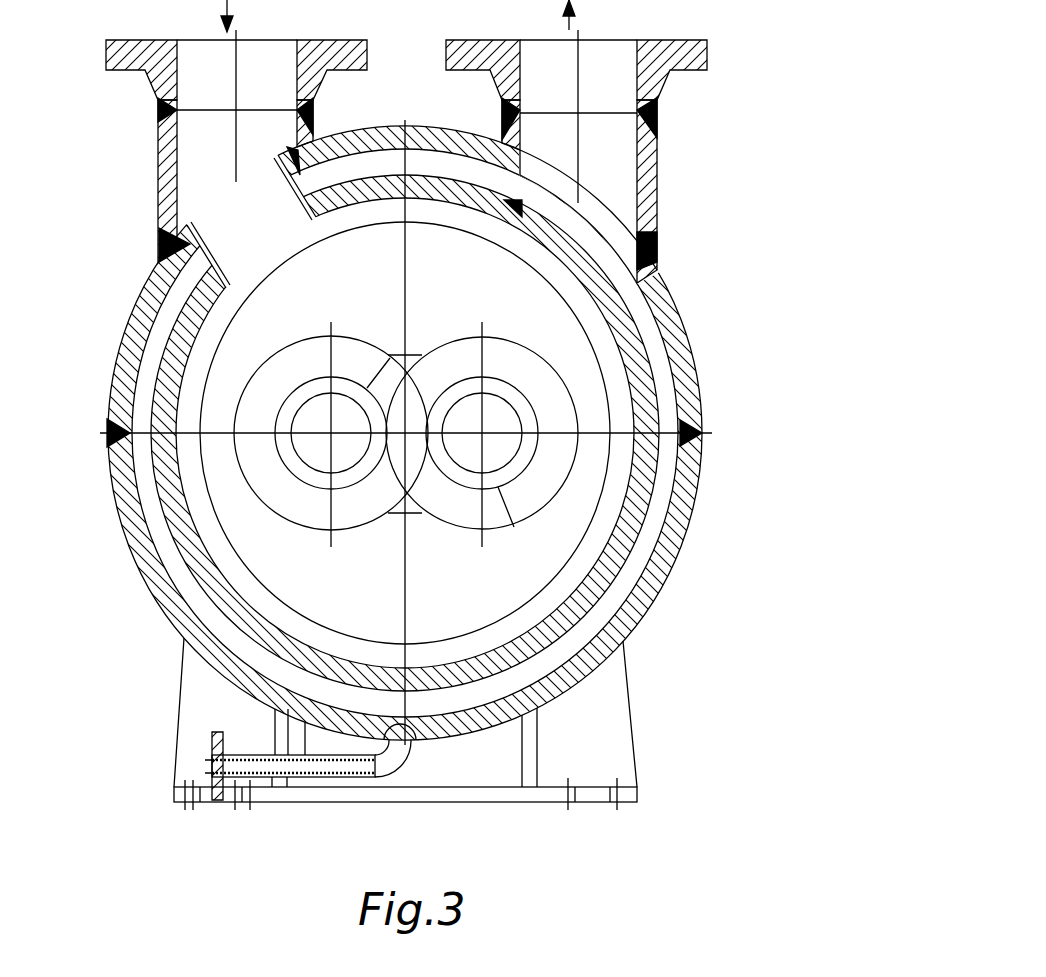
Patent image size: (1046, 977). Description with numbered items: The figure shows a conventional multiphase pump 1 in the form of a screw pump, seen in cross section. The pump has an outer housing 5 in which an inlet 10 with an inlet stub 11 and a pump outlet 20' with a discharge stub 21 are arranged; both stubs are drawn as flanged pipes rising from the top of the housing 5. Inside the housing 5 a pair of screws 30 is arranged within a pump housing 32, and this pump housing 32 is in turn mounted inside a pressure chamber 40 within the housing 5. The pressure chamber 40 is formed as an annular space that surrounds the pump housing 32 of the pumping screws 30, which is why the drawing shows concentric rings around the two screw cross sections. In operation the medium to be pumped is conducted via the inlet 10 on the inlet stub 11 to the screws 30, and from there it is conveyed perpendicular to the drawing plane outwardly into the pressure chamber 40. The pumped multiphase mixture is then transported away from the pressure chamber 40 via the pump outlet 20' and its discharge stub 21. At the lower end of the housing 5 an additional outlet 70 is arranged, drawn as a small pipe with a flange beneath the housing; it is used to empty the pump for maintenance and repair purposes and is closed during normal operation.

The multiphase pump 1 is at (117, 675).
The housing 5 is at (130, 356).
The inlet 10 is at (197, 167).
The inlet stub 11 is at (150, 68).
The pump outlet 20' is at (617, 141).
The discharge stub 21 is at (707, 50).
The screws 30 is at (457, 357).
The pump housing 32 is at (216, 593).
The pressure chamber 40 is at (176, 565).
The additional outlet 70 is at (382, 767).